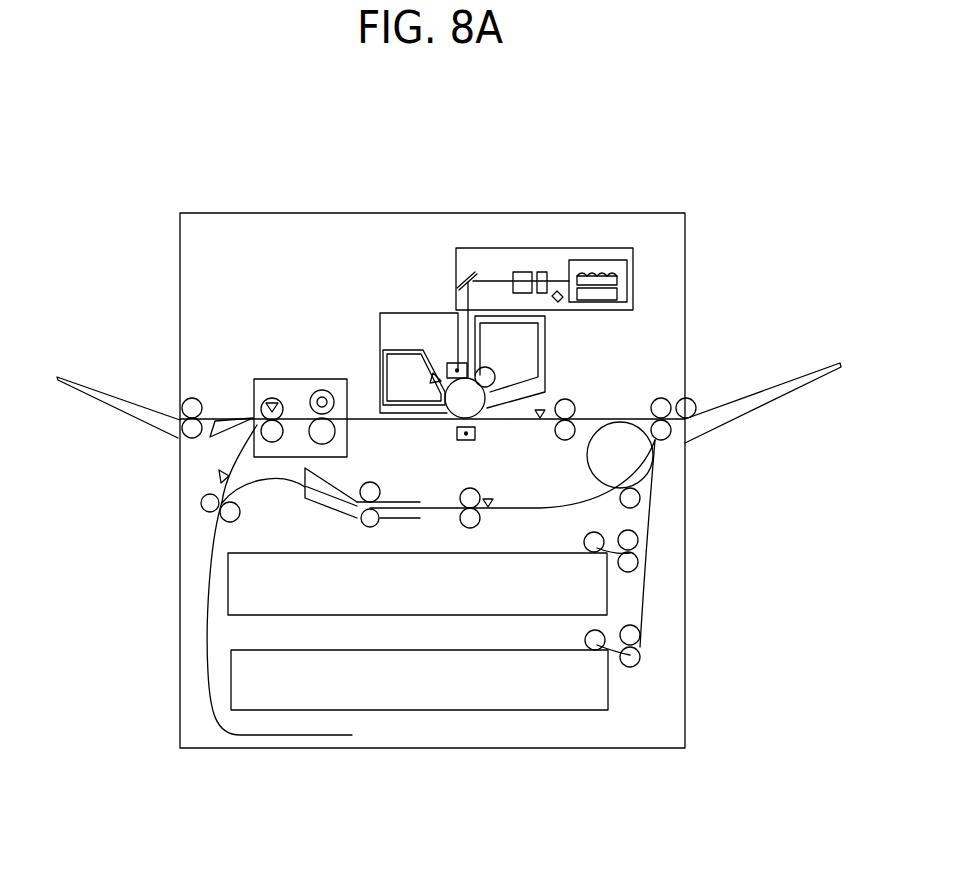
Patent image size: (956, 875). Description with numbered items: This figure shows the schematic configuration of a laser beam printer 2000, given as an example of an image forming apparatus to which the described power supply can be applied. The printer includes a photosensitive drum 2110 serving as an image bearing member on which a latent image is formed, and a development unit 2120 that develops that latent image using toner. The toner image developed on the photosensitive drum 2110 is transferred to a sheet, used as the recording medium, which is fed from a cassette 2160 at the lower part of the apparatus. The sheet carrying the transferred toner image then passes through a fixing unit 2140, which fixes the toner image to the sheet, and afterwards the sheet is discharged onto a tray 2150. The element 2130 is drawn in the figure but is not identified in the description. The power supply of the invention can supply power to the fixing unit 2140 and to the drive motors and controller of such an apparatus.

The laser beam printer 2000 is at (372, 213).
The photosensitive drum 2110 is at (408, 313).
The development unit 2120 is at (487, 372).
The photosensitive drum 2130 is at (455, 412).
The fixing unit 2140 is at (304, 379).
The tray 2150 is at (100, 388).
The cassette 2160 is at (303, 553).